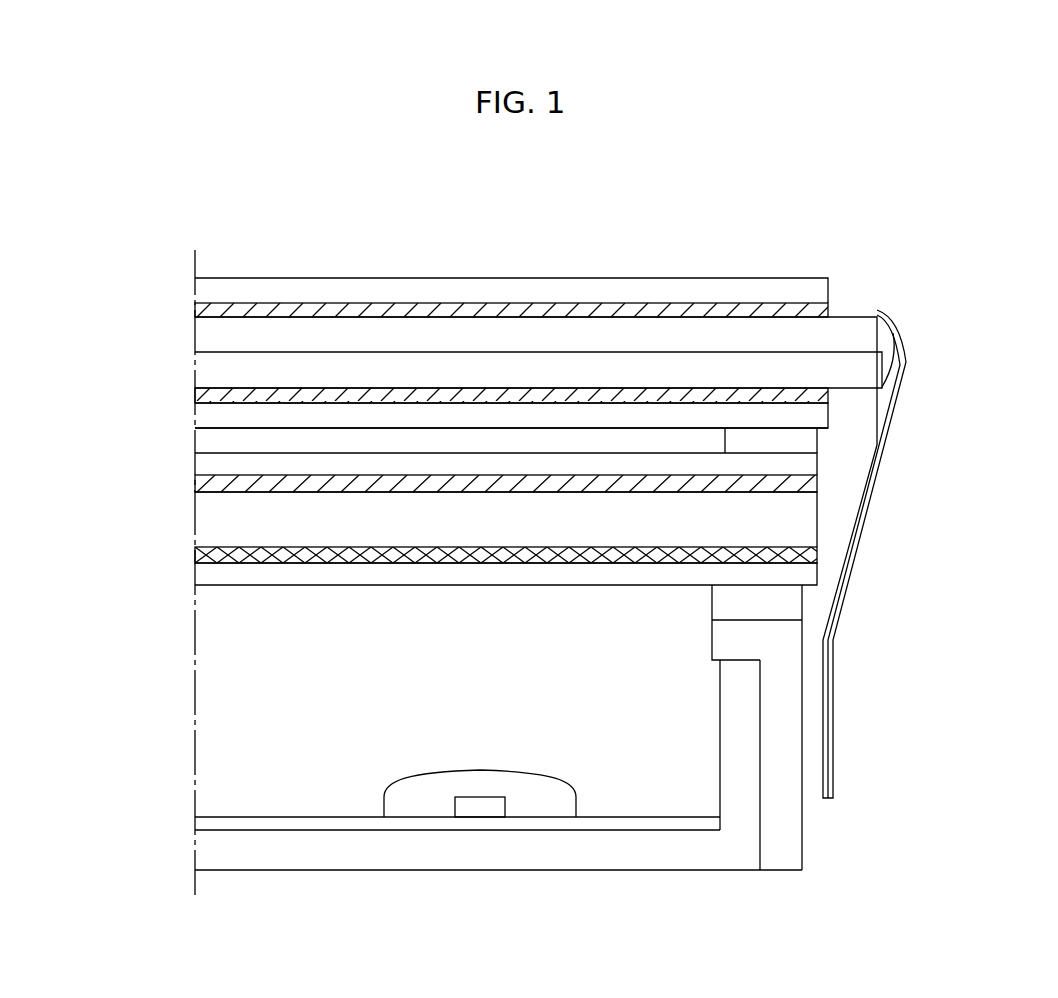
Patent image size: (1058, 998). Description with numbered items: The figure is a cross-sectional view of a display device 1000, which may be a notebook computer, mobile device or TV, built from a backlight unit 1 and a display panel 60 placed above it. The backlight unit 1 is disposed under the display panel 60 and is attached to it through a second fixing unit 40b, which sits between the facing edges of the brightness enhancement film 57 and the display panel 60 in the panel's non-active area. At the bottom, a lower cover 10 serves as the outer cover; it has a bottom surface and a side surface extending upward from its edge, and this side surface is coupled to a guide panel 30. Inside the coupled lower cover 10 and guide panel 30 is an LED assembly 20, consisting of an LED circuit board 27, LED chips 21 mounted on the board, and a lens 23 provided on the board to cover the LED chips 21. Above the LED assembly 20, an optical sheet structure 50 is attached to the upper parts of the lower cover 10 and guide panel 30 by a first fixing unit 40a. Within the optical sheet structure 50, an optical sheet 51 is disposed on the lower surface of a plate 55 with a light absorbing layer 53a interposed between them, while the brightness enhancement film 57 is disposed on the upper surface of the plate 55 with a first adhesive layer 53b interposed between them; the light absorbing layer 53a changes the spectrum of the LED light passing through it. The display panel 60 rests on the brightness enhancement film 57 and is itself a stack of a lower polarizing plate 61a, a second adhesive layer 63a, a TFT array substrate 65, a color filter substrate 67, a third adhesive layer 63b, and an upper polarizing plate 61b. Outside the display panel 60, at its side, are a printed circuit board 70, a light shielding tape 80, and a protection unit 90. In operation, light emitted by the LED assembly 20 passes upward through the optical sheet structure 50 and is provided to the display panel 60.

The display device 1000 is at (803, 181).
The backlight unit 1 is at (86, 523).
The lower cover 10 is at (210, 847).
The LED assembly 20 is at (128, 638).
The LED chips 21 is at (472, 807).
The lens 23 is at (397, 795).
The LED circuit board 27 is at (193, 821).
The guide panel 30 is at (788, 842).
The first fixing unit 40a is at (785, 602).
The second fixing unit 40b is at (800, 440).
The optical sheet structure 50 is at (128, 460).
The optical sheet 51 is at (208, 580).
The light absorbing layer 53a is at (208, 554).
The first adhesive layer 53b is at (208, 482).
The plate 55 is at (208, 524).
The brightness enhancement film 57 is at (208, 467).
The display panel 60 is at (126, 282).
The lower polarizing plate 61a is at (208, 417).
The upper polarizing plate 61b is at (208, 289).
The second adhesive layer 63a is at (208, 401).
The third adhesive layer 63b is at (208, 303).
The TFT array substrate 65 is at (208, 370).
The color filter substrate 67 is at (208, 335).
The printed circuit board 70 is at (823, 772).
The light shielding tape 80 is at (832, 720).
The protection unit 90 is at (888, 340).